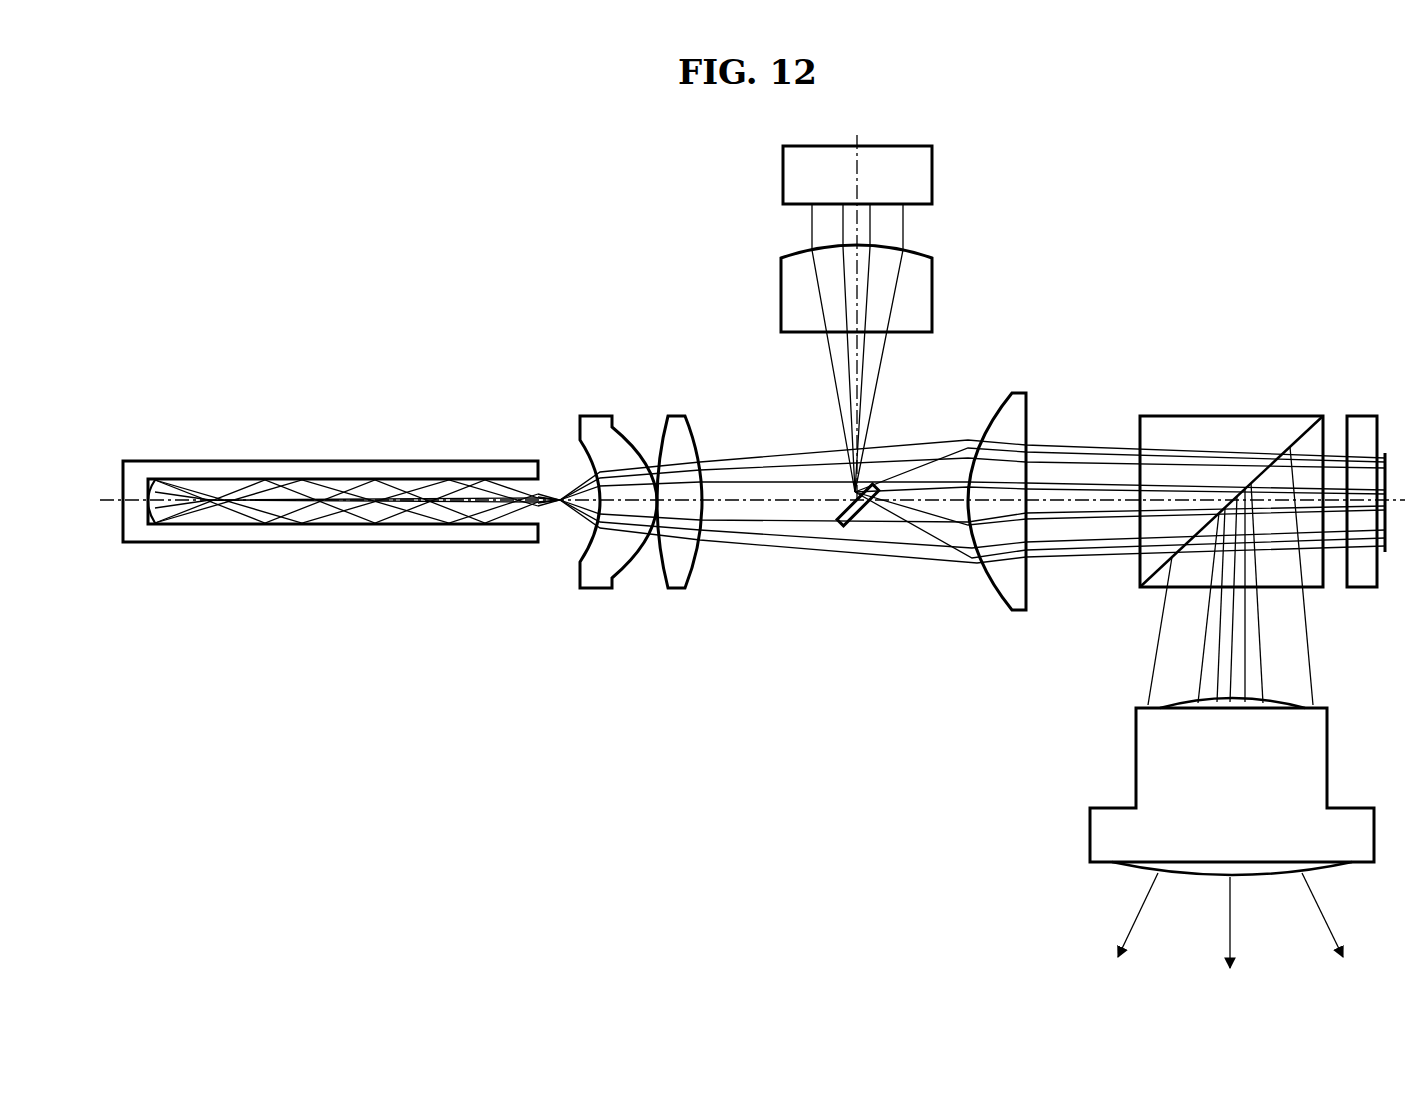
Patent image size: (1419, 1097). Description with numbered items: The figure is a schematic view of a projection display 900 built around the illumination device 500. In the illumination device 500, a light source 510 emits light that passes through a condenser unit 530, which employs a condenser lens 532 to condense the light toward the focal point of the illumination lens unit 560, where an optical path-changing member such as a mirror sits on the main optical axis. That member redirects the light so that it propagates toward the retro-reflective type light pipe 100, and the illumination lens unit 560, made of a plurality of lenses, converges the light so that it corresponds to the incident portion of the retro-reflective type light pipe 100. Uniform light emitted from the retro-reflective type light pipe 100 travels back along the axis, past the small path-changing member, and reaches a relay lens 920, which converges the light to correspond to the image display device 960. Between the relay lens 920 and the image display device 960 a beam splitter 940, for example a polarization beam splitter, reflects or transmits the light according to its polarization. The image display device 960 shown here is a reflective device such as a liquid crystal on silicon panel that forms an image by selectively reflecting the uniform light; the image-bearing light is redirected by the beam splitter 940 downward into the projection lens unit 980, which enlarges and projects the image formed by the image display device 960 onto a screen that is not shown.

The retro-reflective type light pipe 100 is at (157, 457).
The illumination device 500 is at (975, 272).
The light source 510 is at (786, 180).
The condenser unit 530 is at (737, 265).
The condenser lens 532 is at (783, 305).
The illumination lens unit 560 is at (708, 412).
The projection display 900 is at (1285, 172).
The relay lens 920 is at (1020, 400).
The beam splitter 940 is at (1245, 428).
The image display device 960 is at (1367, 420).
The projection lens unit 980 is at (1310, 752).